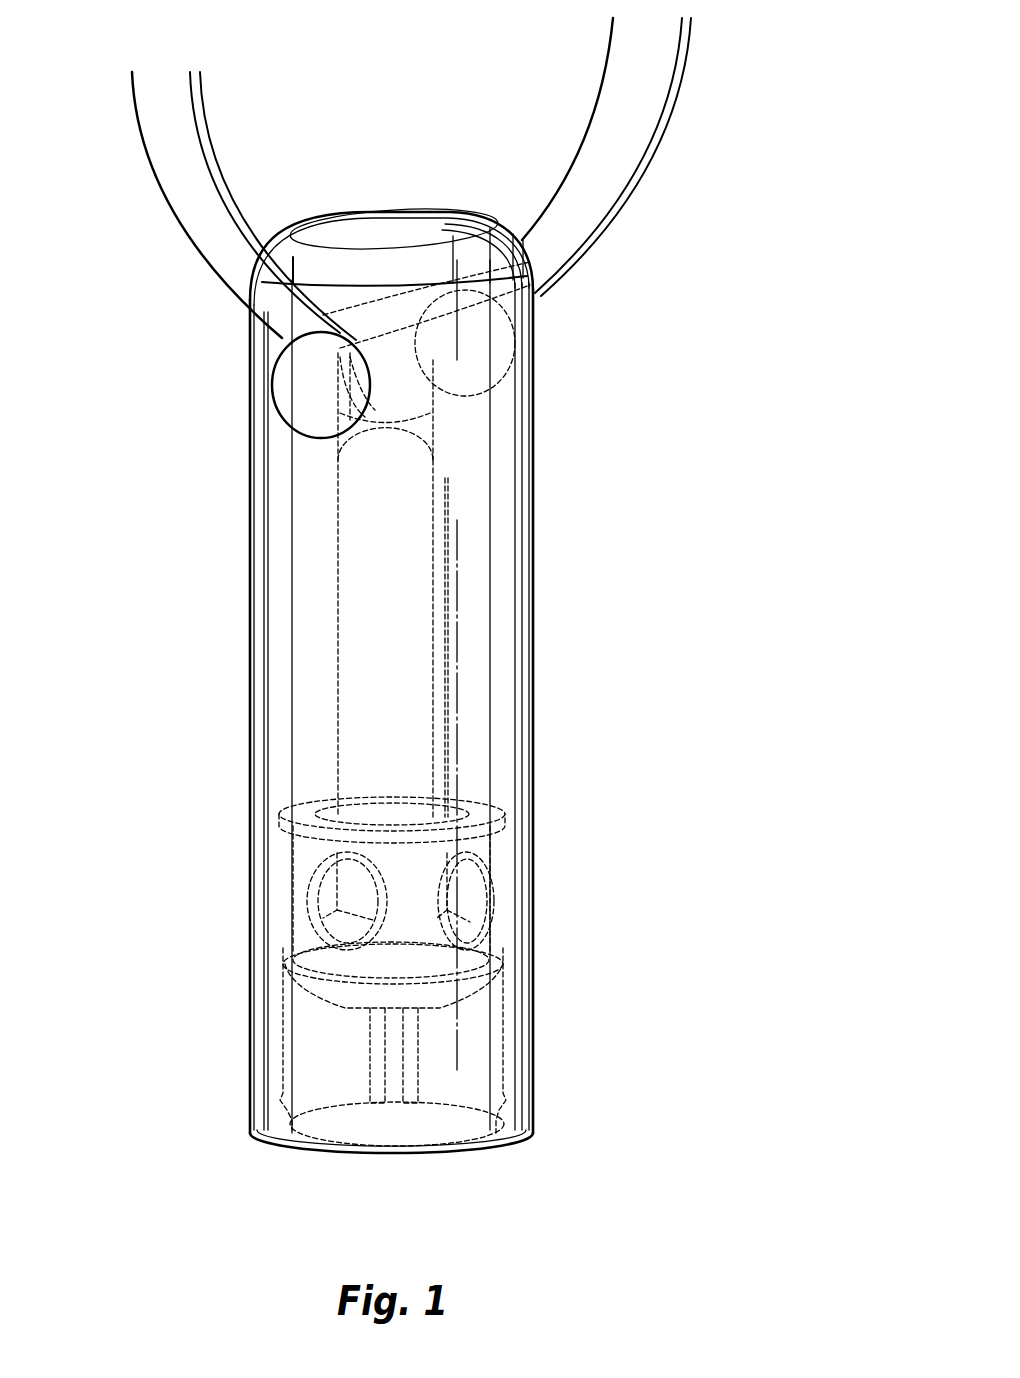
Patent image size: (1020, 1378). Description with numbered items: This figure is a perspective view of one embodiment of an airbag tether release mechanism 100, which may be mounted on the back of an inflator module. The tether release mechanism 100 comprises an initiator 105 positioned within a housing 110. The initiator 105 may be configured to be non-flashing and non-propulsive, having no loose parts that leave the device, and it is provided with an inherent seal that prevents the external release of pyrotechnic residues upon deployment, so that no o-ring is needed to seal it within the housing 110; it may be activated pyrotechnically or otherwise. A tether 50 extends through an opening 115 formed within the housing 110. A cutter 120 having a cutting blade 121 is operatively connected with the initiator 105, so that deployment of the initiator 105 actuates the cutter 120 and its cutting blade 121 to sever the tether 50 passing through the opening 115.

The tether release mechanism 100 is at (670, 212).
The tether 50 is at (200, 218).
The housing 110 is at (377, 223).
The opening 115 is at (320, 388).
The cutter 120 is at (393, 612).
The cutting blade 121 is at (385, 457).
The initiator 105 is at (428, 1038).